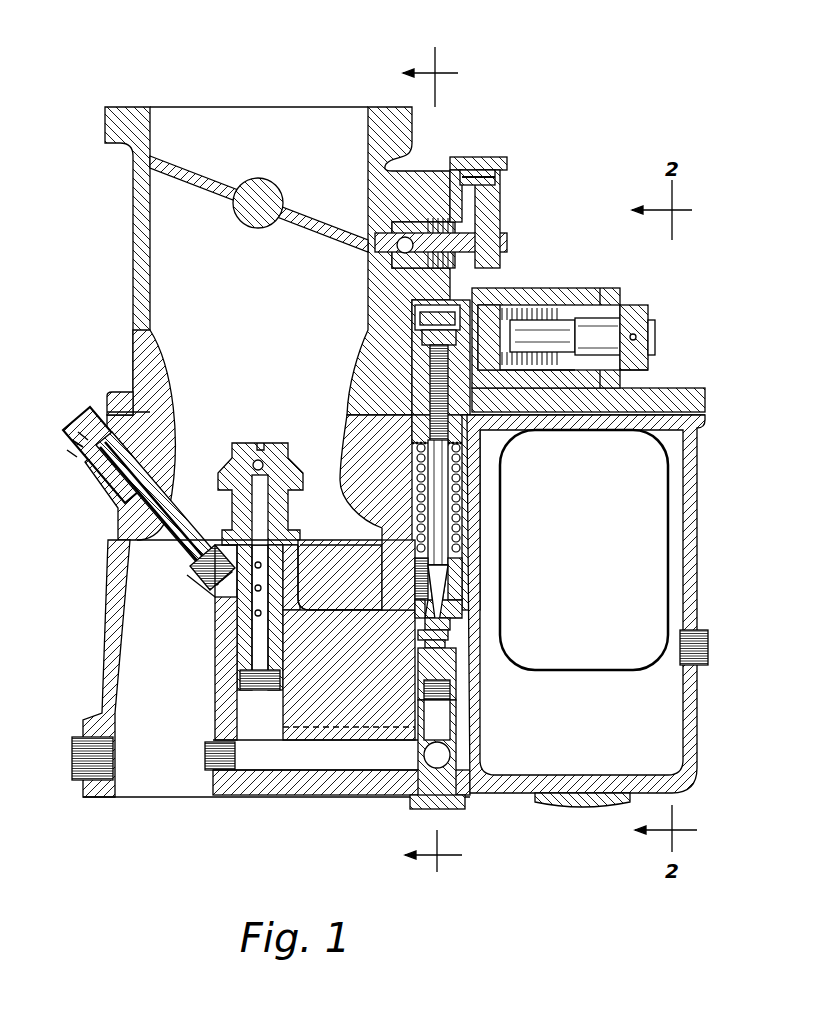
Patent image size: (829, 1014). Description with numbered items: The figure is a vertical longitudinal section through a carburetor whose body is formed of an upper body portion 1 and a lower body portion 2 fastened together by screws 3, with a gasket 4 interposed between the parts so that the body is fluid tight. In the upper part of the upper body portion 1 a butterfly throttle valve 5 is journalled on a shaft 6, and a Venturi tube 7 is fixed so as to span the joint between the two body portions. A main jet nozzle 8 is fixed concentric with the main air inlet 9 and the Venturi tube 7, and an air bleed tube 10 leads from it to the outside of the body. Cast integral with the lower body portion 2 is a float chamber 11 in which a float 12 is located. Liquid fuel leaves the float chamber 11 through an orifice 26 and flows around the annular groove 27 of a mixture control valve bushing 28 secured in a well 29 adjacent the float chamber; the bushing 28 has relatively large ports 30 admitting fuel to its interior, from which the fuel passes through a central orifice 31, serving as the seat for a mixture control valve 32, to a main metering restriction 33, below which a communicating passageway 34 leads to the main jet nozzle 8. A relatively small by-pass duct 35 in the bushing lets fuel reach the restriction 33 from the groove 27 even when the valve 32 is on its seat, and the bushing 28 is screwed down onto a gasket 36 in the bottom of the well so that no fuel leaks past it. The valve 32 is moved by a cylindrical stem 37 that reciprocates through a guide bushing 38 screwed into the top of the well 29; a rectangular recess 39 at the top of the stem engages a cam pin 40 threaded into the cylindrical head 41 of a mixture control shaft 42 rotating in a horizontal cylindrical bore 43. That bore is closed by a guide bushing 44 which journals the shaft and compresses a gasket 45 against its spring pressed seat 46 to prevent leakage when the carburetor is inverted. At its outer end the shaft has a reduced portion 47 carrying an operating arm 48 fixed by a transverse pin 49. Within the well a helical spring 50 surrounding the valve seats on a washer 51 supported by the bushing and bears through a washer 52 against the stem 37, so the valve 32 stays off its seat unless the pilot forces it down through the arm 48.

The upper body portion 1 is at (135, 268).
The lower body portion 2 is at (108, 622).
The screws 3 is at (432, 463).
The gasket 4 is at (165, 420).
The butterfly throttle valve 5 is at (150, 170).
The shaft 6 is at (243, 210).
The Venturi tube 7 is at (160, 378).
The main jet nozzle 8 is at (250, 455).
The main air inlet 9 is at (150, 785).
The air bleed tube 10 is at (100, 468).
The float chamber 11 is at (645, 708).
The float 12 is at (640, 548).
The orifice 26 is at (472, 625).
The annular groove 27 is at (465, 605).
The mixture control valve bushing 28 is at (470, 568).
The well 29 is at (462, 500).
The ports 30 is at (475, 612).
The central orifice 31 is at (455, 650).
The mixture control valve 32 is at (438, 525).
The main metering restriction 33 is at (452, 725).
The communicating passageway 34 is at (330, 762).
The by-pass duct 35 is at (440, 645).
The gasket 36 is at (455, 665).
The cylindrical stem 37 is at (430, 350).
The guide bushing 38 is at (418, 400).
The rectangular recess 39 is at (435, 322).
The cam pin 40 is at (583, 340).
The cylindrical head 41 is at (560, 330).
The mixture control shaft 42 is at (590, 330).
The horizontal cylindrical bore 43 is at (530, 300).
The guide bushing 44 is at (610, 320).
The gasket 45 is at (545, 315).
The spring pressed seat 46 is at (540, 375).
The reduced portion 47 is at (640, 322).
The operating arm 48 is at (640, 352).
The transverse pin 49 is at (640, 337).
The helical spring 50 is at (420, 503).
The washer 51 is at (420, 565).
The washer 52 is at (420, 446).